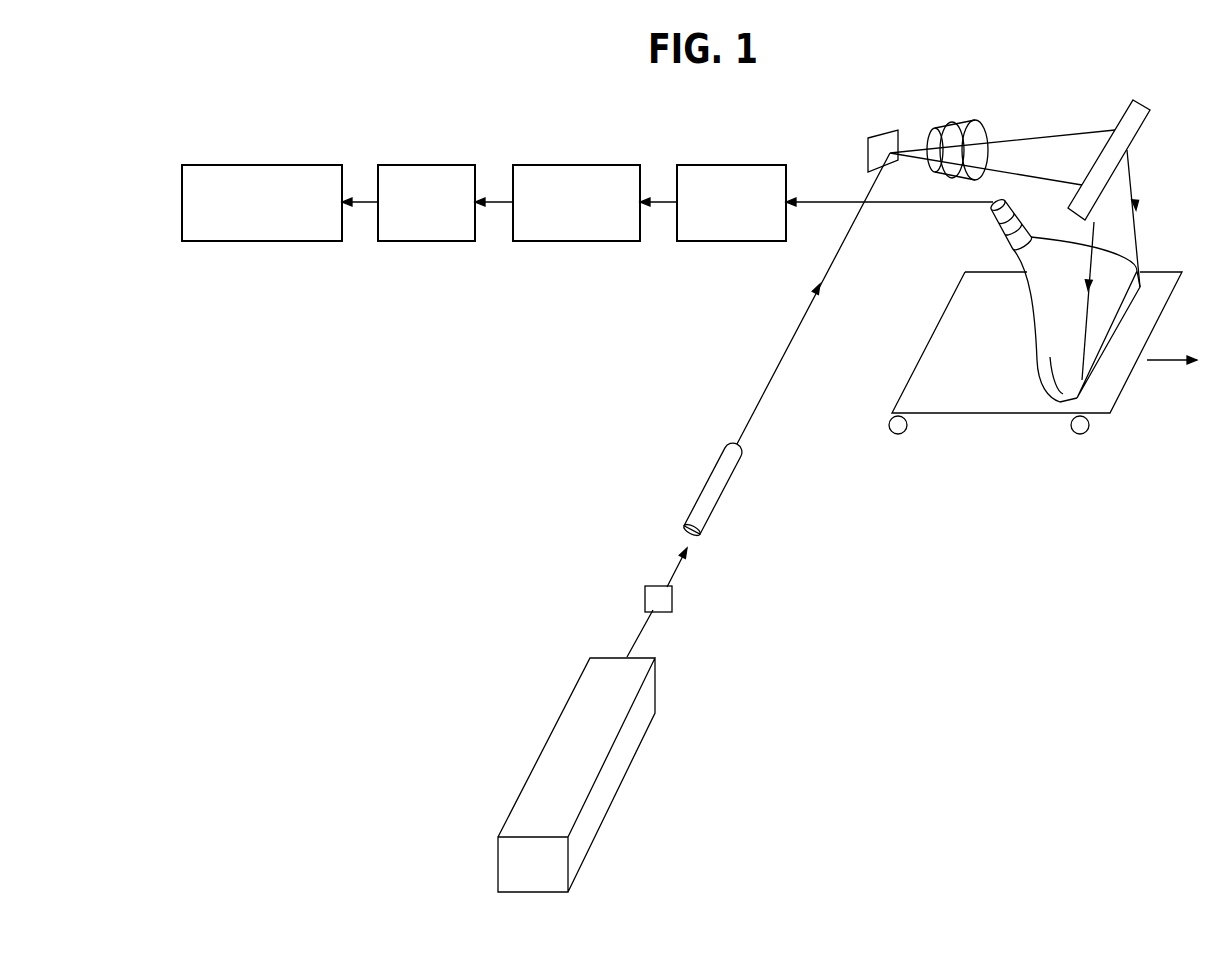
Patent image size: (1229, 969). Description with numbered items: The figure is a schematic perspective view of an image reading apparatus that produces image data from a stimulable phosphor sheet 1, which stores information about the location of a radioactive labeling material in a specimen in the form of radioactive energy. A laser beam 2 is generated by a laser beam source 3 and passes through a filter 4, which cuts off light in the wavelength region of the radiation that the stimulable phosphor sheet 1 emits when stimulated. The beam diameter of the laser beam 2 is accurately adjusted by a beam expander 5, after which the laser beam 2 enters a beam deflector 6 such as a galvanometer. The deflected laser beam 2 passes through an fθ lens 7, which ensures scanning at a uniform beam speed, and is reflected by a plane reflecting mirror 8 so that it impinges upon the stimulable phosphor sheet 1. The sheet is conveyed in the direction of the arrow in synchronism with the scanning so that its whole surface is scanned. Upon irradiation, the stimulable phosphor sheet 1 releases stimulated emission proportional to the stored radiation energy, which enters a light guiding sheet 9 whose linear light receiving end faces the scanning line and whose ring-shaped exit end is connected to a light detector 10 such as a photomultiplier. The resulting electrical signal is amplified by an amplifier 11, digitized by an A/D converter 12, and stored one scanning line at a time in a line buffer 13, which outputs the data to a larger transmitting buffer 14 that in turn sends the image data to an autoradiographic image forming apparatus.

The stimulable phosphor sheet 1 is at (977, 393).
The laser beam 2 is at (800, 318).
The laser beam source 3 is at (593, 687).
The filter 4 is at (645, 590).
The beam expander 5 is at (708, 492).
The beam deflector 6 is at (892, 140).
The fθ lens 7 is at (958, 125).
The plane reflecting mirror 8 is at (1127, 125).
The light guiding sheet 9 is at (1053, 407).
The light detector 10 is at (997, 218).
The amplifier 11 is at (740, 165).
The A/D converter 12 is at (582, 165).
The line buffer 13 is at (425, 165).
The transmitting buffer 14 is at (272, 165).